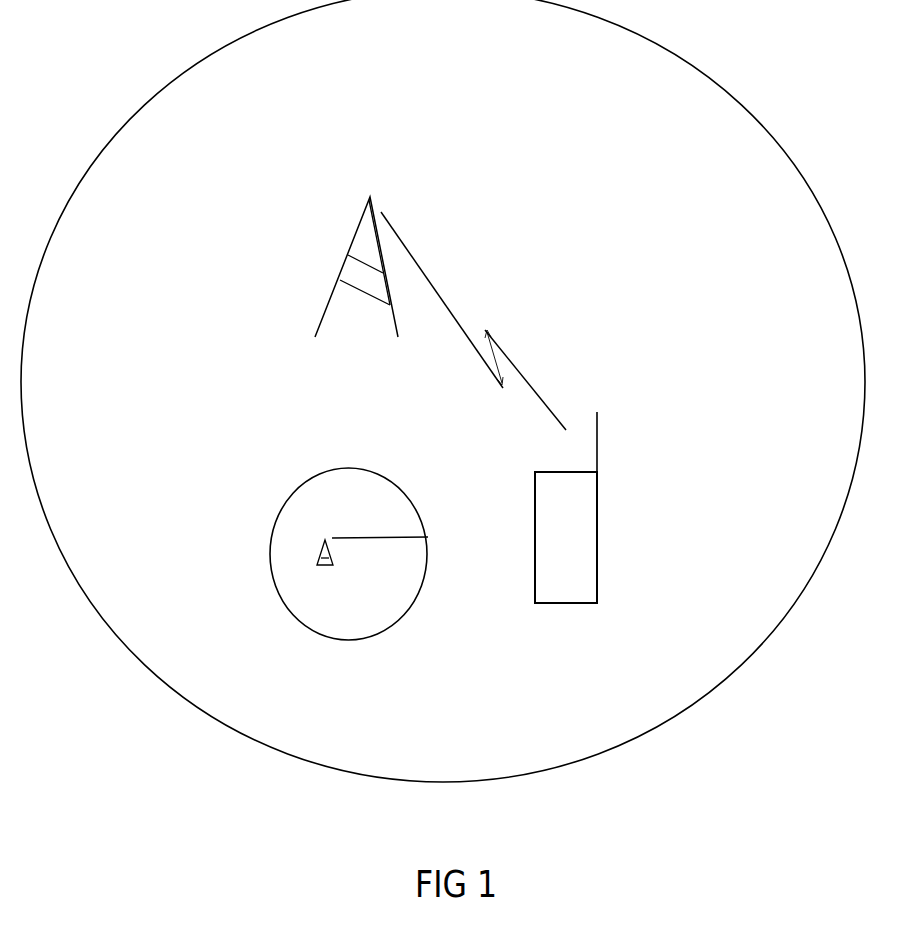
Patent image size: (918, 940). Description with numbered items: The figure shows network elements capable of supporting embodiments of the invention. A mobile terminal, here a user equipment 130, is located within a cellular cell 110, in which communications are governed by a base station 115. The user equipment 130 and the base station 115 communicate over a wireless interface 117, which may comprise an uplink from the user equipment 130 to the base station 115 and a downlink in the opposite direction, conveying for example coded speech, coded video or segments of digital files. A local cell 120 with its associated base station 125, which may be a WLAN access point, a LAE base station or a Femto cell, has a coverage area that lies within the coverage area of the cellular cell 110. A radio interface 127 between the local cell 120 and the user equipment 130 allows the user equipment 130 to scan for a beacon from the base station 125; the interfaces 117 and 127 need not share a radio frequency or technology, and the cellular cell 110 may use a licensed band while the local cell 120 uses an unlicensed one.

The cellular cell 110 is at (443, 391).
The base station 115 is at (356, 270).
The wireless interface 117 is at (473, 321).
The local cell 120 is at (348, 554).
The base station of local cell 125 is at (324, 571).
The radio interface 127 is at (520, 526).
The user equipment 130 is at (566, 507).